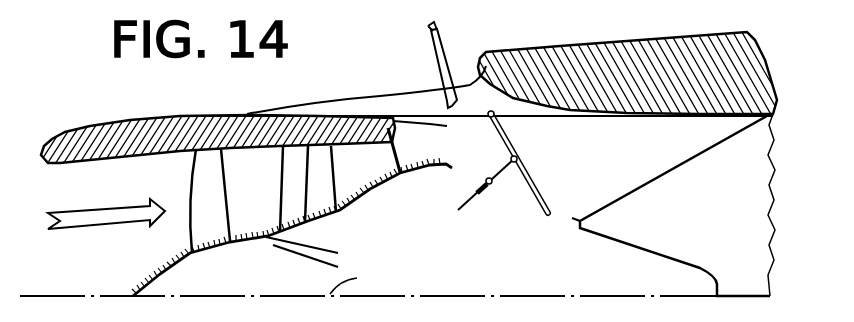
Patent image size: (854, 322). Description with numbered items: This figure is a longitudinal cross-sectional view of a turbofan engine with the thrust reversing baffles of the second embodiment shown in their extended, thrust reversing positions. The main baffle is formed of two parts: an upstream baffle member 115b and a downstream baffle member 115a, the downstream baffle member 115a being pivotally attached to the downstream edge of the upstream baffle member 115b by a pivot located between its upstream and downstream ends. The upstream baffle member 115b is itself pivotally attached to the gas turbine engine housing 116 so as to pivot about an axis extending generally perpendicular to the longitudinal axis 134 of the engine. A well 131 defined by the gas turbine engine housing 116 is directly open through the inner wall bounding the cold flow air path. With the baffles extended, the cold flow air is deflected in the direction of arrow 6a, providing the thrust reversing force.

The direction of deflected cold flow air 6a is at (441, 67).
The gas turbine engine housing 116 is at (420, 166).
The downstream baffle member 115a is at (544, 189).
The upstream baffle member 115b is at (470, 199).
The well 131 is at (509, 194).
The longitudinal axis 134 is at (358, 278).